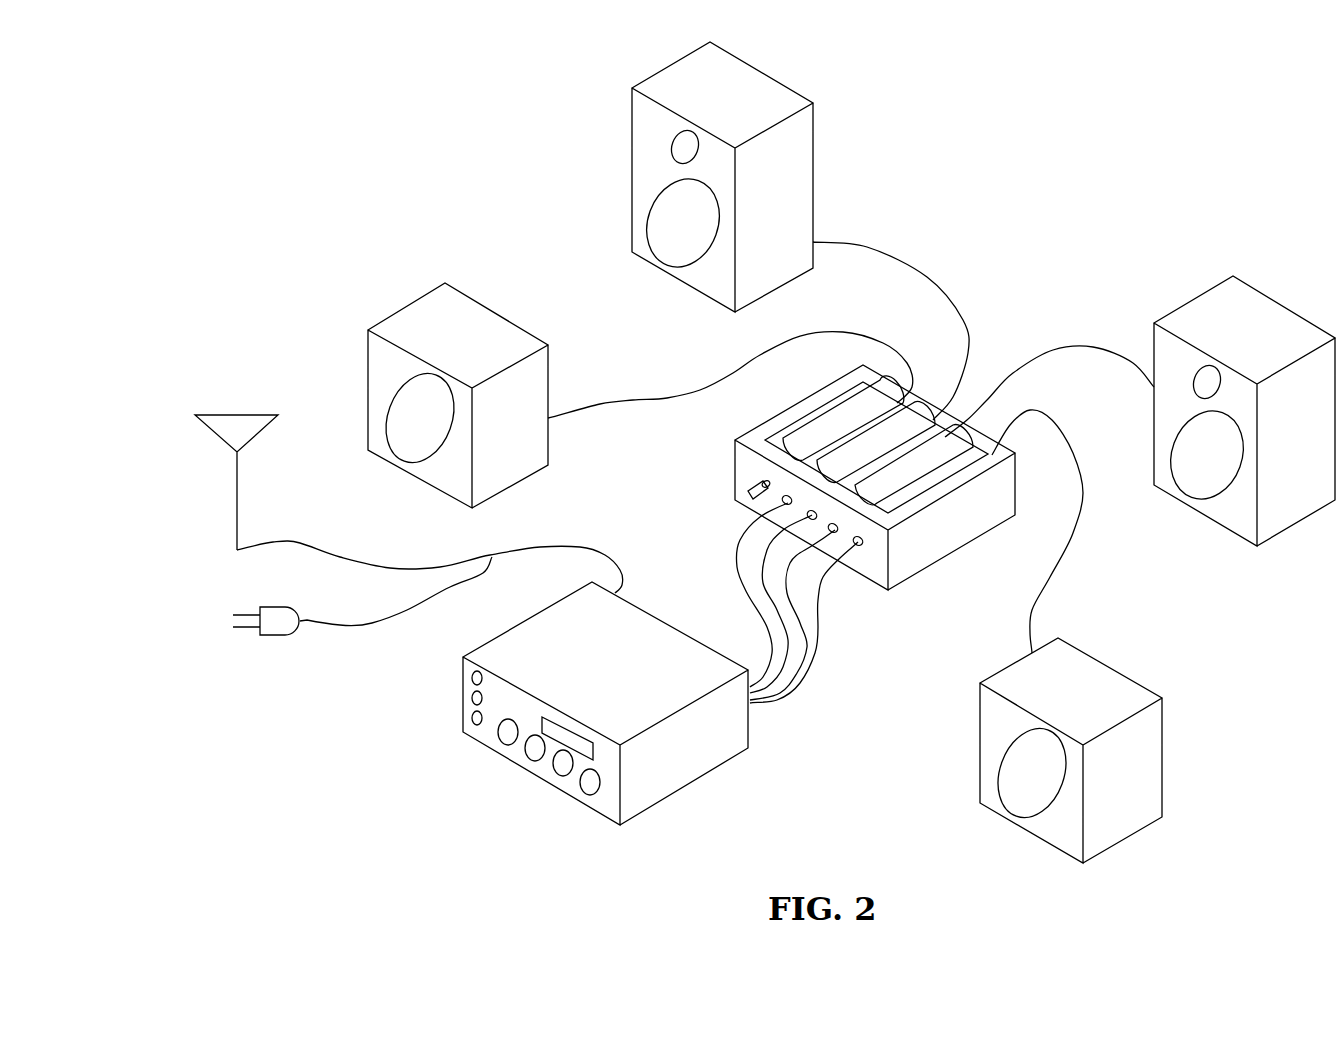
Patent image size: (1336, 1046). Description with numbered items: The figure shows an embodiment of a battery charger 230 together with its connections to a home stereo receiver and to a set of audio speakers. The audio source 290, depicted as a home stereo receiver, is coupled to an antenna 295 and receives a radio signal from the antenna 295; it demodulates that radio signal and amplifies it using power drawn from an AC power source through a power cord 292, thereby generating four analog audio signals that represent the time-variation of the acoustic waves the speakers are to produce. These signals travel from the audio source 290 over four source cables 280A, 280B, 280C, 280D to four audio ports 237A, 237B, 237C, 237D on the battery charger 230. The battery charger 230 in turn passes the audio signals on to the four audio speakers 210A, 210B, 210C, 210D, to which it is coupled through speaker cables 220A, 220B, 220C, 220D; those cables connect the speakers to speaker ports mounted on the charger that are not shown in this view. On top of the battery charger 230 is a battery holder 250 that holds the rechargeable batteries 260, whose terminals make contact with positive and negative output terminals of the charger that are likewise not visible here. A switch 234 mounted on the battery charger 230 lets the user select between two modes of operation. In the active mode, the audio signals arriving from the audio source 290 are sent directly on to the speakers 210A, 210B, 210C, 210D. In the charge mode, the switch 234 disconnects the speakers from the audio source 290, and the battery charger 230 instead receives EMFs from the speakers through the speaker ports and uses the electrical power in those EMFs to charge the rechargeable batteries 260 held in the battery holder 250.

The audio speaker 210A is at (420, 323).
The audio speaker 210B is at (645, 238).
The audio speaker 210C is at (1287, 508).
The audio speaker 210D is at (1098, 837).
The speaker cable 220A is at (667, 398).
The speaker cable 220B is at (931, 282).
The speaker cable 220C is at (1017, 367).
The speaker cable 220D is at (1043, 585).
The battery charger 230 is at (860, 487).
The switch 234 is at (752, 488).
The audio port 237A is at (782, 502).
The audio port 237B is at (807, 516).
The audio port 237C is at (836, 533).
The audio port 237D is at (860, 546).
The battery holder 250 is at (972, 457).
The rechargeable batteries 260 is at (840, 417).
The source cable 280A is at (744, 591).
The source cable 280B is at (770, 624).
The source cable 280C is at (795, 626).
The source cable 280D is at (817, 657).
The audio source 290 is at (492, 733).
The power cord 292 is at (372, 625).
The antenna 295 is at (237, 530).